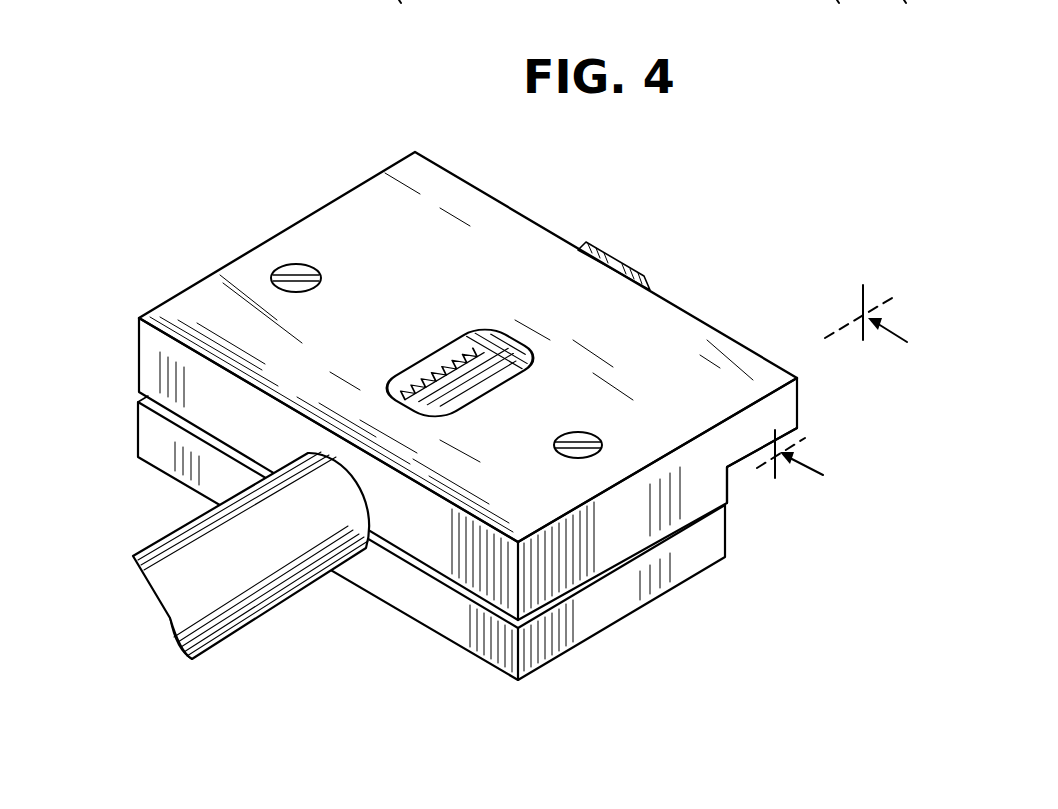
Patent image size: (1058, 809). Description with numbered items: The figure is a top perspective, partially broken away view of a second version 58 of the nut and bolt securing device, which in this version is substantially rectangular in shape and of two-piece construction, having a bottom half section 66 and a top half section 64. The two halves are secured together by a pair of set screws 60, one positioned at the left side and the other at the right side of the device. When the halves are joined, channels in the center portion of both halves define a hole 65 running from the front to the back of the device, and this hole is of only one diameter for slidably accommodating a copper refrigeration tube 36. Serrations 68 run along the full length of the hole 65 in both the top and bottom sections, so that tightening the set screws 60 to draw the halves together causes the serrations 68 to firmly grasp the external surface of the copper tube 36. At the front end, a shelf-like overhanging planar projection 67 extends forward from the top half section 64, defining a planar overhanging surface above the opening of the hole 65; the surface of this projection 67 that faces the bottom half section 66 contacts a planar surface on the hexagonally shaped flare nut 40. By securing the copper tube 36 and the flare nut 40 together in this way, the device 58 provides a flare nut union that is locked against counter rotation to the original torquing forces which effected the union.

The second version of the nut and bolt securing device 58 is at (357, 126).
The set screws 60 is at (318, 273).
The flare nut 40 is at (637, 270).
The hole 65 is at (498, 362).
The serrations 68 is at (413, 377).
The overhanging planar projection 67 is at (792, 405).
The top half section 64 is at (733, 467).
The bottom half section 66 is at (668, 585).
The copper tube 36 is at (248, 618).